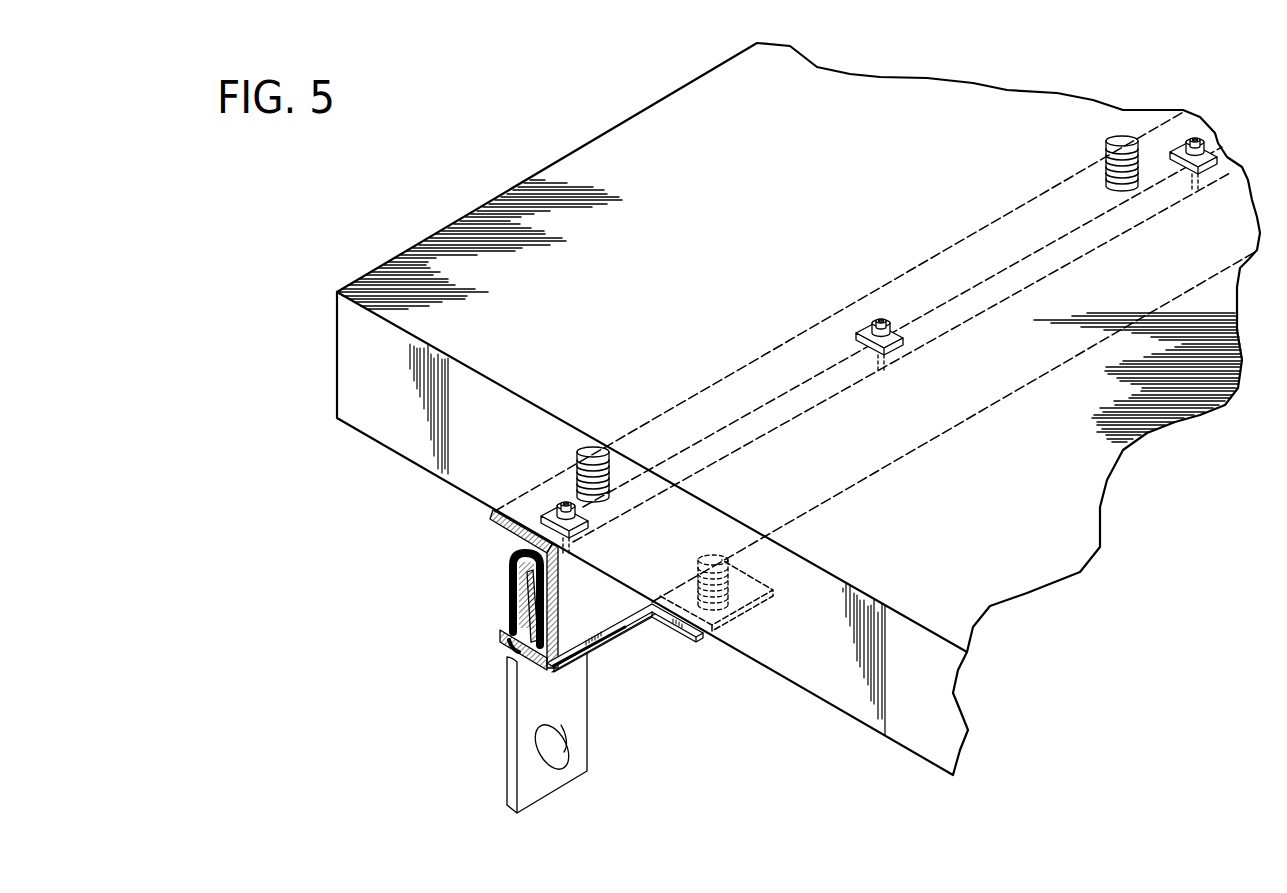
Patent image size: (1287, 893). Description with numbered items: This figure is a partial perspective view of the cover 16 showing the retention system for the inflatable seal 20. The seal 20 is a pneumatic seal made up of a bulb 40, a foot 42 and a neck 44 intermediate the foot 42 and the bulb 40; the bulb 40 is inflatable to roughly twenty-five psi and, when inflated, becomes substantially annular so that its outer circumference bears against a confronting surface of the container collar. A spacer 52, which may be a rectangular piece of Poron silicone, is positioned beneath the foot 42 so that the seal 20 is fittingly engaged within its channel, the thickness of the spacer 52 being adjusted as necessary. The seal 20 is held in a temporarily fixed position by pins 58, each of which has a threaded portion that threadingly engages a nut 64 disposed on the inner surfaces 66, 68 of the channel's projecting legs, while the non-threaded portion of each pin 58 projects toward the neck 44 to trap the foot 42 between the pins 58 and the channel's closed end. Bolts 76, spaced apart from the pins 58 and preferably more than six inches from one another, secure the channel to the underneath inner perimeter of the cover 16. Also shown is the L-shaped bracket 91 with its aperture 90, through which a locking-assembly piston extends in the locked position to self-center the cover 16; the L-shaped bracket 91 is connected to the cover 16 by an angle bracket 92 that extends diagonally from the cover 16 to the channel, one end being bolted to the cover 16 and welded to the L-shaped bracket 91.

The cover 16 is at (587, 160).
The inflatable seal 20 is at (510, 576).
The bulb 40 is at (467, 577).
The foot 42 is at (622, 617).
The neck 44 is at (513, 548).
The spacer 52 is at (587, 670).
The pin 58 is at (566, 504).
The nut 64 is at (543, 513).
The inner surface 66 is at (493, 522).
The inner surface 68 is at (503, 634).
The bolt 76 is at (588, 452).
The aperture 90 is at (560, 753).
The L-shaped bracket 91 is at (533, 733).
The angle bracket 92 is at (594, 654).